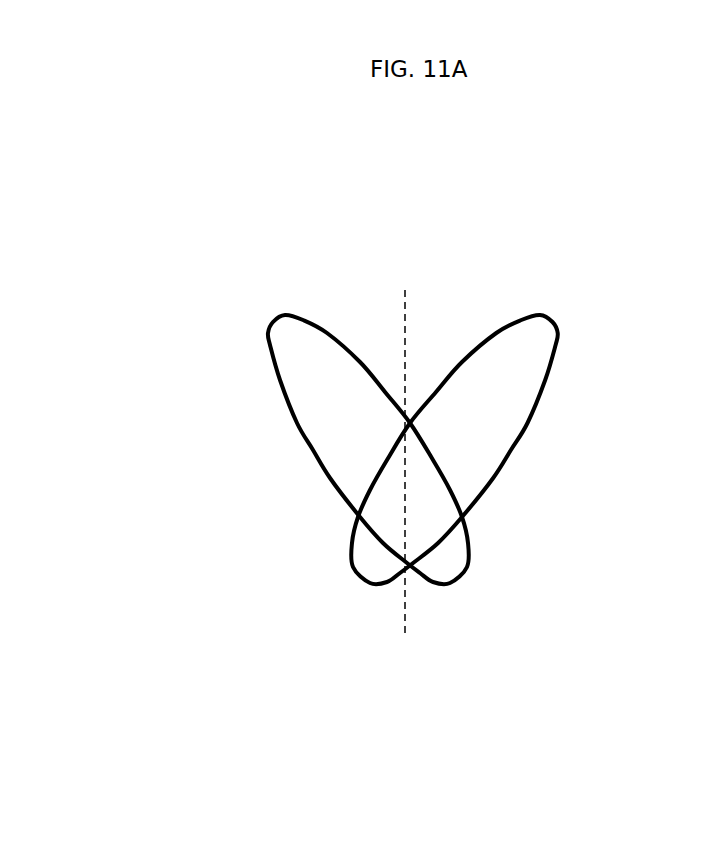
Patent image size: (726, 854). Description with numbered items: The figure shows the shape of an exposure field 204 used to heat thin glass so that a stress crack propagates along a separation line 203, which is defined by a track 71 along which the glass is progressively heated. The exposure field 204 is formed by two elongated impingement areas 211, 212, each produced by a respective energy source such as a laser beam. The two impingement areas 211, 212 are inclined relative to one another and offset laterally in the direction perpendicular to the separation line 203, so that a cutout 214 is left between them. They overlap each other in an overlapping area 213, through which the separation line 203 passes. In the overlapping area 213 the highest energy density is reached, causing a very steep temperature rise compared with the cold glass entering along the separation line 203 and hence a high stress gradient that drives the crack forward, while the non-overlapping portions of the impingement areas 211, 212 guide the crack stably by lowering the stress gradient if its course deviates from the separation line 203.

The track 71 is at (371, 446).
The separation line 203 is at (407, 335).
The exposure field 204 is at (283, 528).
The first impingement area 211 is at (305, 448).
The second impingement area 212 is at (513, 452).
The overlapping area 213 is at (437, 513).
The cutout 214 is at (428, 371).